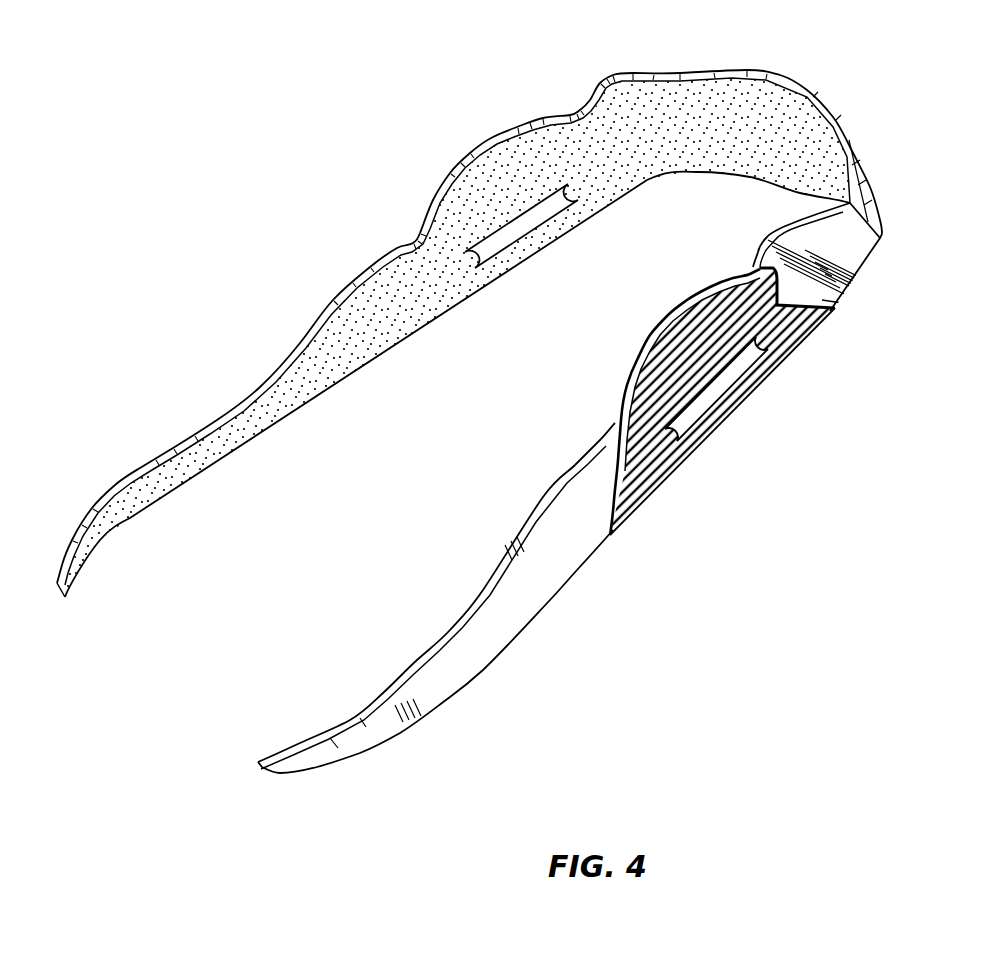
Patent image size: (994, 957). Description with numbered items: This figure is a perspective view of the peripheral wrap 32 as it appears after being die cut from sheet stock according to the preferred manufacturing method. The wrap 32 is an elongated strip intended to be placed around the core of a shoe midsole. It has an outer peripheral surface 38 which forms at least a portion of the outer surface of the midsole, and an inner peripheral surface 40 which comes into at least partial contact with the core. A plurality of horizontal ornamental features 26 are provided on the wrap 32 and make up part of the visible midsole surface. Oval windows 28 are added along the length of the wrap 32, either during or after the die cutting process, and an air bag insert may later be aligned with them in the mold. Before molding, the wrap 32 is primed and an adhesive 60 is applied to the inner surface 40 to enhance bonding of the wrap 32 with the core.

The wrap 32 is at (361, 187).
The inner peripheral surface 40 is at (405, 340).
The adhesive 60 is at (698, 95).
The oval windows 28 is at (523, 237).
The horizontal ornamental features 26 is at (650, 480).
The outer peripheral surface 38 is at (555, 577).